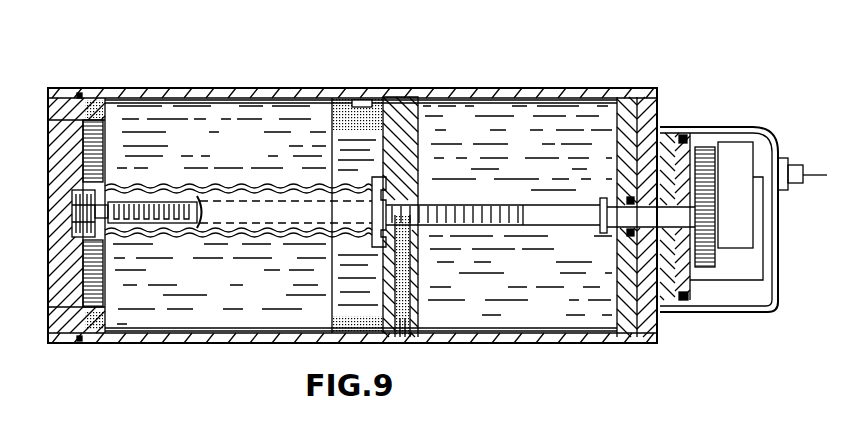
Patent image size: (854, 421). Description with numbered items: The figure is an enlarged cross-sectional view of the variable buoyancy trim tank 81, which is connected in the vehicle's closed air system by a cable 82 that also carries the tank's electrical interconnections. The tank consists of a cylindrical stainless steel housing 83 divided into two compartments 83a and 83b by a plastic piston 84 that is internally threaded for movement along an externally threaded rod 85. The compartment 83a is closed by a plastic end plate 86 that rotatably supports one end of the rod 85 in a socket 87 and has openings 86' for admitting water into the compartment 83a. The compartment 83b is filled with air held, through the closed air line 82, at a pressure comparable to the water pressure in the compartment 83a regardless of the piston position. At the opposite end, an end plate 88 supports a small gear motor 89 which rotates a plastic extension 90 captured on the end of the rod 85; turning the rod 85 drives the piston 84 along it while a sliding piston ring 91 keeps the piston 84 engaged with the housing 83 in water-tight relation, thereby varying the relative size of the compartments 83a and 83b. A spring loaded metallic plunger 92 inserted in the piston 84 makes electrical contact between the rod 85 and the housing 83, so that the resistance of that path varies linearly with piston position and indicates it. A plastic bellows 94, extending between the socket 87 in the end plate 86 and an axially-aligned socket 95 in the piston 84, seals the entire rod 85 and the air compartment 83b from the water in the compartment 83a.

The variable buoyancy trim tank 81 is at (307, 72).
The cable 82 is at (790, 163).
The cylindrical stainless steel housing 83 is at (468, 97).
The compartment 83a is at (238, 150).
The compartment 83b is at (532, 153).
The plastic piston 84 is at (398, 108).
The externally threaded rod 85 is at (430, 205).
The plastic end plate 86 is at (59, 213).
The openings 86' is at (57, 217).
The socket 87 is at (103, 168).
The end plate 88 is at (658, 112).
The gear motor 89 is at (745, 128).
The plastic extension 90 is at (607, 234).
The sliding piston ring 91 is at (380, 97).
The spring loaded metallic plunger 92 is at (411, 323).
The plastic bellows 94 is at (265, 186).
The socket 95 is at (375, 185).